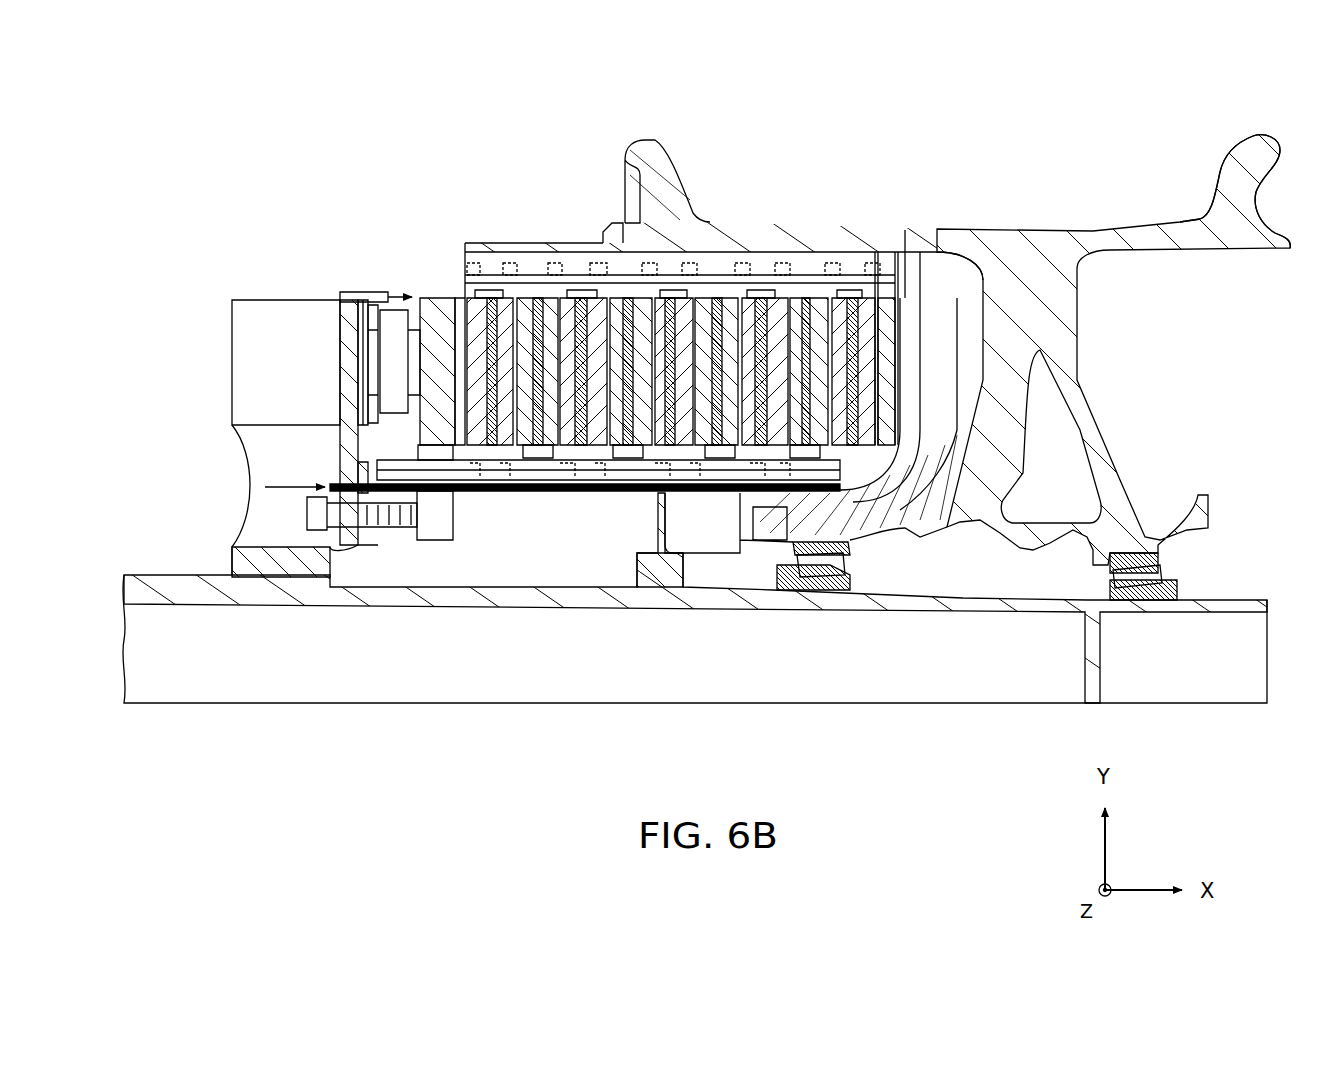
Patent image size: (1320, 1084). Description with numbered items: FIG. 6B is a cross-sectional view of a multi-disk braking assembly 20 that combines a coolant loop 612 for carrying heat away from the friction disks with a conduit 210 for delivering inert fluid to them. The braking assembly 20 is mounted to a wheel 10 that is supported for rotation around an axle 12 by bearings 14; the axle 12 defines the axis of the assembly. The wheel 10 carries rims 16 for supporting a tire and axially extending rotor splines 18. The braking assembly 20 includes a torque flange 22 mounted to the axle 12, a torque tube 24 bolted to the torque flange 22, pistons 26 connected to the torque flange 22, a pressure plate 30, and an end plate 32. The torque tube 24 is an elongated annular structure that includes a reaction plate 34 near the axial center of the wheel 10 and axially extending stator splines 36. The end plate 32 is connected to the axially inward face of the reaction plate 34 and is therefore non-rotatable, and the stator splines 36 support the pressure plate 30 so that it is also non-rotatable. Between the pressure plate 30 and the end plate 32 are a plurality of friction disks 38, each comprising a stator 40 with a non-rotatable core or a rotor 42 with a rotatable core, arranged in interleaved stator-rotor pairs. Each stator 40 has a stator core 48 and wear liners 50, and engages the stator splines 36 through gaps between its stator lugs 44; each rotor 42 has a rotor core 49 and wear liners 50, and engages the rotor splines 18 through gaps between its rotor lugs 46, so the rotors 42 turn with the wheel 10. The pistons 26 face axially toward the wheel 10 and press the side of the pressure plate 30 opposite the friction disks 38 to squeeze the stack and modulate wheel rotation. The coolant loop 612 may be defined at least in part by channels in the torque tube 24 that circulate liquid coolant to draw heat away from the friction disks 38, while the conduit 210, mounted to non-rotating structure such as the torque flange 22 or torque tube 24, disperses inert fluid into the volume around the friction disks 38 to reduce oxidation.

The wheel 10 is at (1090, 205).
The axle 12 is at (997, 605).
The bearings 14 is at (840, 568).
The rims 16 is at (1220, 170).
The rotor splines 18 is at (618, 243).
The multi-disk braking assembly 20 is at (392, 108).
The torque flange 22 is at (340, 478).
The torque tube 24 is at (533, 478).
The pistons 26 is at (378, 318).
The pressure plate 30 is at (428, 296).
The end plate 32 is at (898, 270).
The reaction plate 34 is at (940, 425).
The stator splines 36 is at (592, 480).
The friction disks 38 is at (458, 293).
The stator 40 is at (540, 462).
The rotor 42 is at (488, 288).
The stator lugs 44 is at (783, 492).
The rotor lugs 46 is at (740, 290).
The stator core 48 is at (805, 345).
The rotor core 49 is at (850, 378).
The wear liners 50 is at (820, 290).
The conduit 210 is at (382, 292).
The coolant loop 612 is at (440, 495).